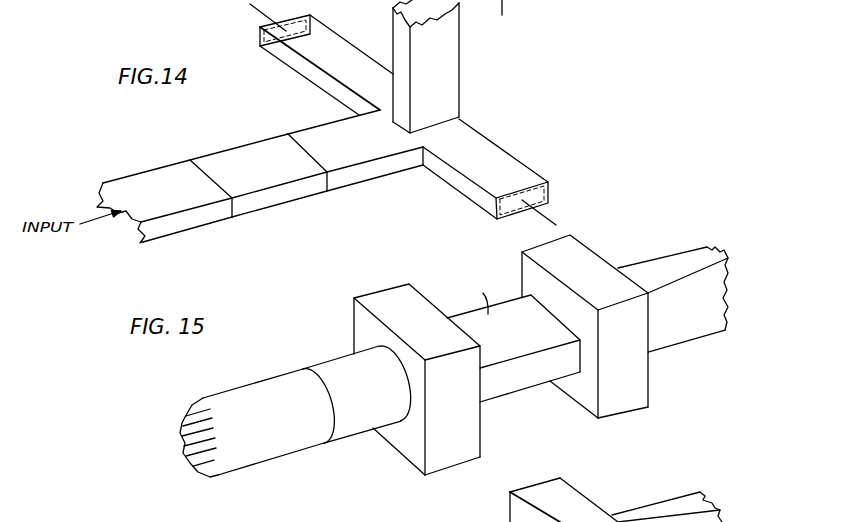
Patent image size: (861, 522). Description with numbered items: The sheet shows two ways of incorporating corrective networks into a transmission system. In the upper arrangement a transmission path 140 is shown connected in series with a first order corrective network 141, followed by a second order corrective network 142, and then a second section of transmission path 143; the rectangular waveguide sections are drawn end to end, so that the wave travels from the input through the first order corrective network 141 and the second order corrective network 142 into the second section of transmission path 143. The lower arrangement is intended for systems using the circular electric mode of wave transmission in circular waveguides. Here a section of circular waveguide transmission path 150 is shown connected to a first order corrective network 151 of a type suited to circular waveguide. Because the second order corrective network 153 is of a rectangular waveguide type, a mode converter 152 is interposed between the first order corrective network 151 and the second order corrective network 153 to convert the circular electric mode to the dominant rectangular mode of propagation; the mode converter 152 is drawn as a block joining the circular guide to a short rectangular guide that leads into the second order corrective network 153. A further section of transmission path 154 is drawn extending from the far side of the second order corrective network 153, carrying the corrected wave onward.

In FIG. 14, the transmission path 140 is at (145, 233).
In FIG. 14, the first order corrective network 141 is at (298, 192).
In FIG. 14, the second order corrective network 142 is at (457, 82).
In FIG. 14, the second section of transmission path 143 is at (457, 12).
In FIG. 15, the circular waveguide transmission path 150 is at (257, 453).
In FIG. 15, the first order corrective network 151 is at (335, 371).
In FIG. 15, the mode converter 152 is at (477, 410).
In FIG. 15, the second order corrective network 153 is at (637, 372).
In FIG. 15, the transmission path 154 is at (683, 253).